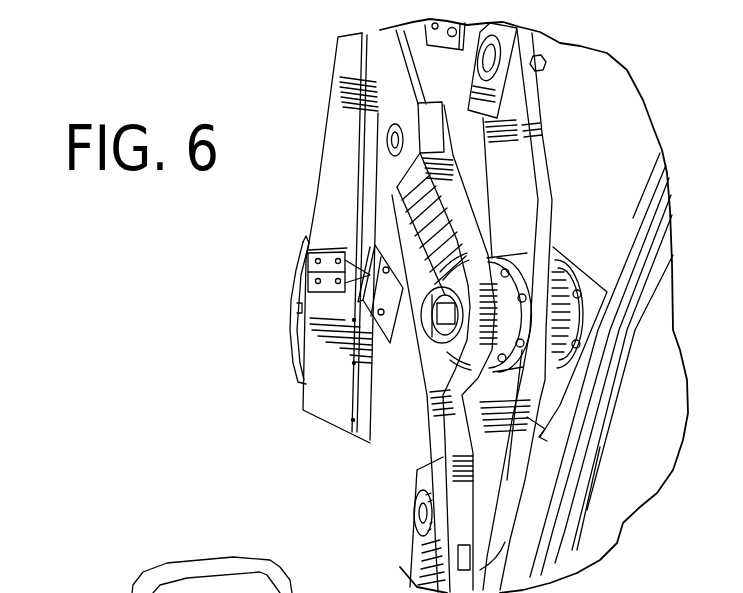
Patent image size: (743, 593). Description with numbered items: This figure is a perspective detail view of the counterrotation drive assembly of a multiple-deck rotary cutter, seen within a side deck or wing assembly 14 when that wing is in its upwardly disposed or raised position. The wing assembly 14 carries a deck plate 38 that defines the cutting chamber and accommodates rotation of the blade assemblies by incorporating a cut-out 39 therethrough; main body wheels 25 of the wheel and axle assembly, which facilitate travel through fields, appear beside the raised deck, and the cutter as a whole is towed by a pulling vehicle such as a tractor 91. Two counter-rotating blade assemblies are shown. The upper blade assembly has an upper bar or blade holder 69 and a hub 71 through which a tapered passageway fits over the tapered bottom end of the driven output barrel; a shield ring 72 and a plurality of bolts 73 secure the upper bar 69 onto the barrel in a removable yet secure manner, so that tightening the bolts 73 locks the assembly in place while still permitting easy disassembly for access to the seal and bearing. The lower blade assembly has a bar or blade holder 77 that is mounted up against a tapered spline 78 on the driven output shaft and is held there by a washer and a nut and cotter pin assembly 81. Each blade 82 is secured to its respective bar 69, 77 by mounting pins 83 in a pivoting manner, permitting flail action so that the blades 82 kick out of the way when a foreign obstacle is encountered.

The side deck or wing assembly 14 is at (658, 129).
The deck plate 38 is at (654, 398).
The main body wheels 25 is at (300, 251).
The upper bar or blade holder 69 is at (540, 199).
The hub 71 is at (562, 322).
The shield ring 72 is at (500, 268).
The bolts 73 is at (581, 293).
The bar or blade holder 77 is at (443, 422).
The tapered spline 78 is at (497, 272).
The nut and cotter pin assembly 81 is at (437, 330).
The blade 82 is at (377, 43).
The mounting pins 83 is at (393, 136).
The cut-out 39 is at (535, 437).
The tractor 91 is at (92, 592).